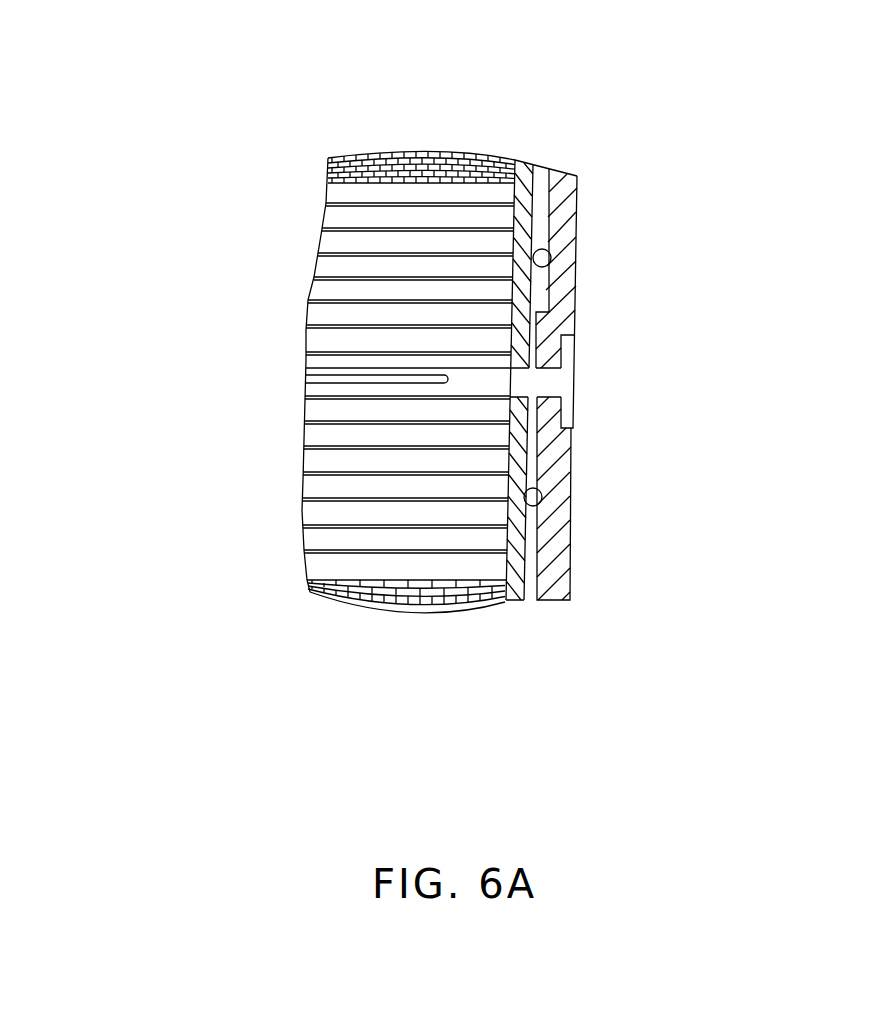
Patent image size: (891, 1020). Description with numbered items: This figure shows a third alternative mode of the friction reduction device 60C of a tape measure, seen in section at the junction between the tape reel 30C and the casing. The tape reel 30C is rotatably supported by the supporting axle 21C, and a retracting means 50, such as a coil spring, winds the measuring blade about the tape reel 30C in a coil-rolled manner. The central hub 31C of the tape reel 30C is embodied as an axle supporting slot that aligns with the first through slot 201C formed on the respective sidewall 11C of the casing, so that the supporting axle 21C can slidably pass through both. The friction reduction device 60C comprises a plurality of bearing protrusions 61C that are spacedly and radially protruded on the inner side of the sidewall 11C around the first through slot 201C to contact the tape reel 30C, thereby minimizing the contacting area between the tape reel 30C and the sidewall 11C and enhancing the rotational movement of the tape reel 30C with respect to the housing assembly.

The sidewall 11C is at (565, 203).
The supporting axle 21C is at (397, 386).
The tape reel 30C is at (523, 227).
The central hub 31C is at (498, 360).
The retracting means 50 is at (482, 472).
The friction reduction device 60C is at (523, 330).
The bearing protrusions 61C is at (548, 261).
The first through slot 201C is at (584, 378).